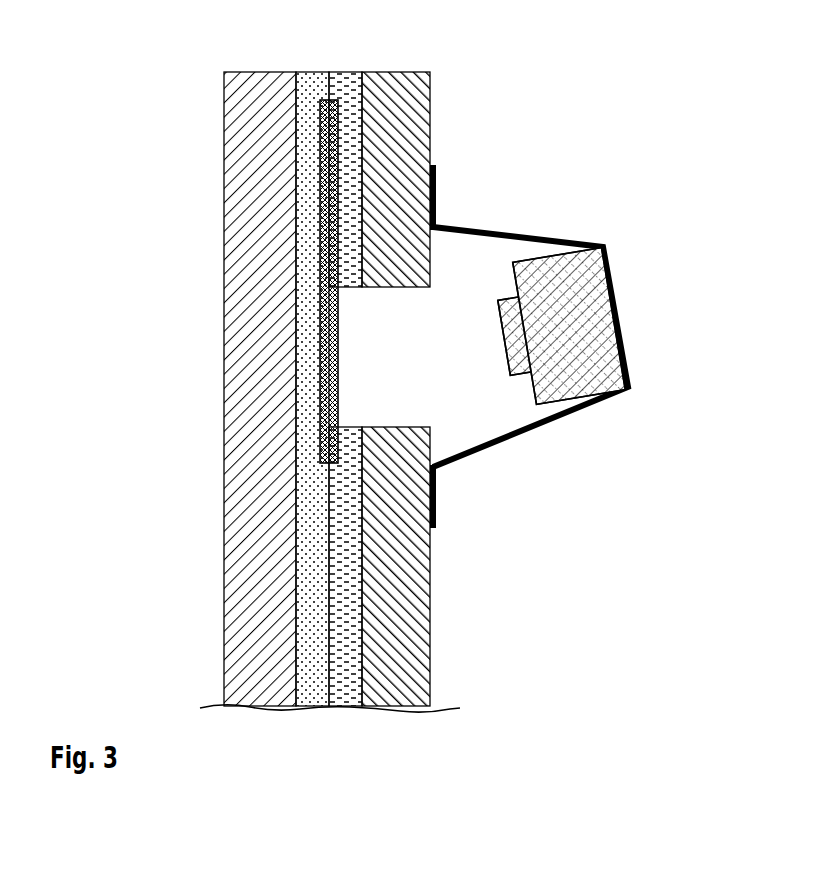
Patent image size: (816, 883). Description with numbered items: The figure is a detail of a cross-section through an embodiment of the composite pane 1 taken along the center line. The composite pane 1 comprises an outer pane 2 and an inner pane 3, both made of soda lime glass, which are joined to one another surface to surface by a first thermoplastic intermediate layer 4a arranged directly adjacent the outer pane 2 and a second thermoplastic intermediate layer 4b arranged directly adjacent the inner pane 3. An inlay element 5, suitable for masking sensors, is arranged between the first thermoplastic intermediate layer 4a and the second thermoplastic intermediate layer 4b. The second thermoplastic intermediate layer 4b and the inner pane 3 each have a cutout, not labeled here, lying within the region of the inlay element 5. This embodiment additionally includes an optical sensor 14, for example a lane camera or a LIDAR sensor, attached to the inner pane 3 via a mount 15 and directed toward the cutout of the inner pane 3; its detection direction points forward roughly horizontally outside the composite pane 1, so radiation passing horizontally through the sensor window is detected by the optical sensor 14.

The composite pane 1 is at (182, 169).
The outer pane 2 is at (245, 355).
The inner pane 3 is at (407, 116).
The first thermoplastic intermediate layer 4a is at (308, 577).
The second thermoplastic intermediate layer 4b is at (348, 143).
The inlay element 5 is at (326, 115).
The optical sensor 14 is at (555, 338).
The mount 15 is at (463, 465).